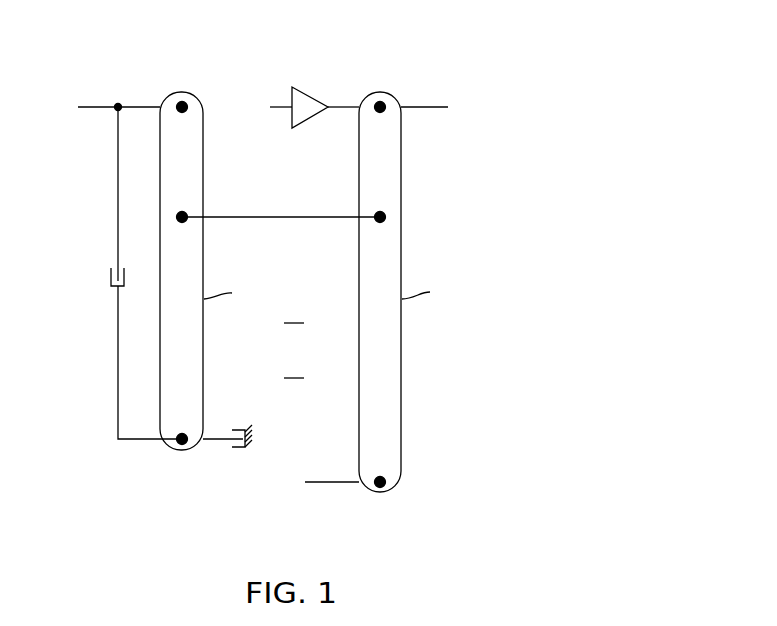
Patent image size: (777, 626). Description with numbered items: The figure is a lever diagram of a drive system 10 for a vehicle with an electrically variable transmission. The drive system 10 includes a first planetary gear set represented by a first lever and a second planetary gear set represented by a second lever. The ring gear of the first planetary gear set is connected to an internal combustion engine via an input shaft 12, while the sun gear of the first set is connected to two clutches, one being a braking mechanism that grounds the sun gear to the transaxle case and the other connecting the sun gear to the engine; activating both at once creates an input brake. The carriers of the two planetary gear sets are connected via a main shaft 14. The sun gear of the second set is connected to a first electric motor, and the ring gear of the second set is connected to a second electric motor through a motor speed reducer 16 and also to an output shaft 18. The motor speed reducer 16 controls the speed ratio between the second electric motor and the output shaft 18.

The drive system 10 is at (601, 80).
The input shaft 12 is at (96, 105).
The main shaft 14 is at (274, 220).
The motor speed reducer 16 is at (306, 96).
The output shaft 18 is at (419, 106).